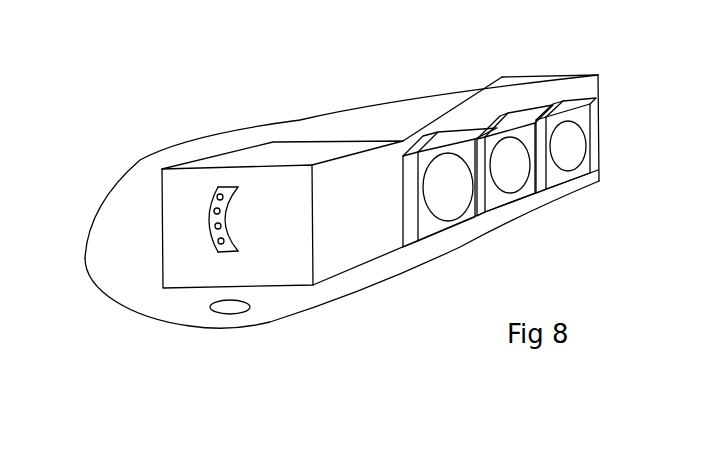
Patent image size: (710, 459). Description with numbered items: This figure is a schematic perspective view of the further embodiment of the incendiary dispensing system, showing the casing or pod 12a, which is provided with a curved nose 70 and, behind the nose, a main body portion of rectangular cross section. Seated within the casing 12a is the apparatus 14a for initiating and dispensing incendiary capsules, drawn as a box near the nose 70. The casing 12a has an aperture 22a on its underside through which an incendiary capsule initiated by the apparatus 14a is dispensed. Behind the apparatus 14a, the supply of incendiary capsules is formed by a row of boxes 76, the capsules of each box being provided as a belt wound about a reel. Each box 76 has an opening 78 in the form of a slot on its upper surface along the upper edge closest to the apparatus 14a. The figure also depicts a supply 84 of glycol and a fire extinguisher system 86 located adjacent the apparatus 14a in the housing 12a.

The curved nose 70 is at (113, 272).
The casing or pod 12a is at (235, 128).
The apparatus for initiating and dispensing an incendiary 14a is at (185, 190).
The aperture 22a is at (222, 313).
The boxes of capsules 76 is at (427, 230).
The opening 78 is at (412, 150).
The supply of glycol 84 is at (328, 257).
The fire extinguisher system 86 is at (378, 232).